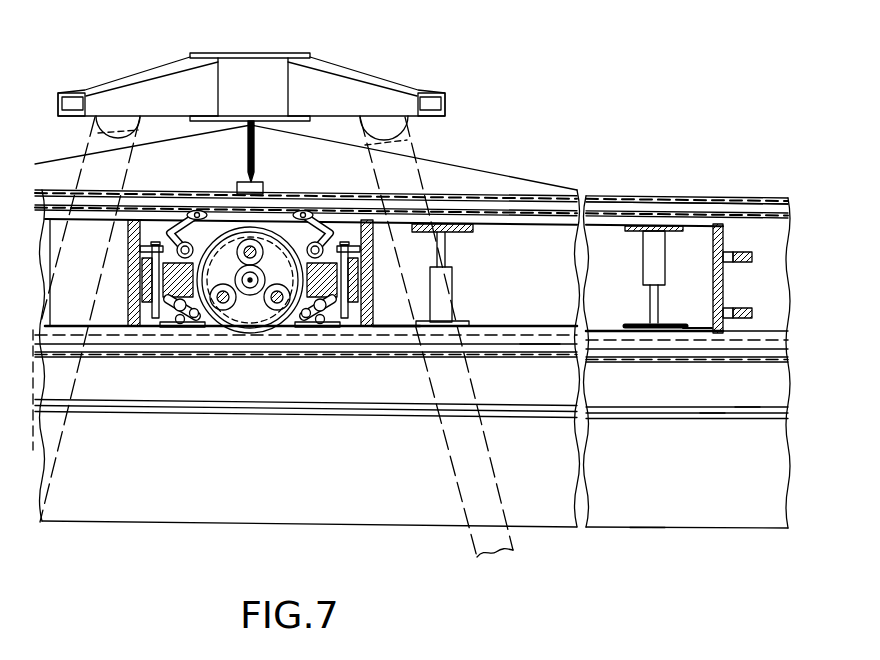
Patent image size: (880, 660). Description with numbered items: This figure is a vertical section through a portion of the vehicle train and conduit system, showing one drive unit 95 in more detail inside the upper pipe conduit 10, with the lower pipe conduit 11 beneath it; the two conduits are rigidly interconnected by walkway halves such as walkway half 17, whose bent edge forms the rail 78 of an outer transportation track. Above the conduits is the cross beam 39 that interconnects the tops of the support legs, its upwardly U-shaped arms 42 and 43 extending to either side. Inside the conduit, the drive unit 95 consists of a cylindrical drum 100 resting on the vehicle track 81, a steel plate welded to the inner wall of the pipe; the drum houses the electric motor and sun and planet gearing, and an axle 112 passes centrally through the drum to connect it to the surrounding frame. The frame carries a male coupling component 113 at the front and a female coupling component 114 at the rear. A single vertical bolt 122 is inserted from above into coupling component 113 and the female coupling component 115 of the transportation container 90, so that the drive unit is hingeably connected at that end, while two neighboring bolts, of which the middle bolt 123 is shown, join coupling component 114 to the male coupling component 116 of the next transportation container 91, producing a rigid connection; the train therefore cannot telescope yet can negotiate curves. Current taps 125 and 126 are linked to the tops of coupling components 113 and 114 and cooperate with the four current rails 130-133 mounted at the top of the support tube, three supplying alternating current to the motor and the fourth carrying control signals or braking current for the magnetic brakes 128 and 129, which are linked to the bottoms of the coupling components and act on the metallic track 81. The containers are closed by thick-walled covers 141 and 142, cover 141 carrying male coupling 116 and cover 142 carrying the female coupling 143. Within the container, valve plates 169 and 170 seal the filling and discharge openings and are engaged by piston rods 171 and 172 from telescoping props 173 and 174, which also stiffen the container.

The pipe conduit 10 is at (475, 196).
The pipe conduit 11 is at (646, 518).
The walkway half 17 is at (742, 396).
The cross beam 39 is at (255, 54).
The arm of cross beam 42 is at (135, 96).
The arm of cross beam 43 is at (347, 84).
The rail 78 is at (712, 405).
The vehicle track 81 is at (219, 332).
The transportation container 90 is at (61, 340).
The transportation container 91 is at (538, 337).
The drive unit 95 is at (250, 332).
The cylindrical drum 100 is at (270, 230).
The axle 112 is at (237, 236).
The coupling component 113 is at (159, 337).
The coupling component 114 is at (326, 337).
The coupling component 115 is at (127, 337).
The coupling component 116 is at (366, 337).
The vertical bolt 122 is at (128, 276).
The middle bolt 123 is at (377, 272).
The current tap 125 is at (198, 213).
The current tap 126 is at (304, 212).
The magnetic brake 128 is at (188, 337).
The magnetic brake 129 is at (297, 337).
The current rails 130-133 is at (642, 213).
The cover 141 is at (394, 332).
The cover 142 is at (707, 312).
The female coupling 143 is at (735, 307).
The valve plate 169 is at (473, 229).
The valve plate 170 is at (679, 320).
The piston rod 171 is at (440, 245).
The piston rod 172 is at (653, 304).
The telescoping prop 173 is at (447, 283).
The telescoping prop 174 is at (650, 250).